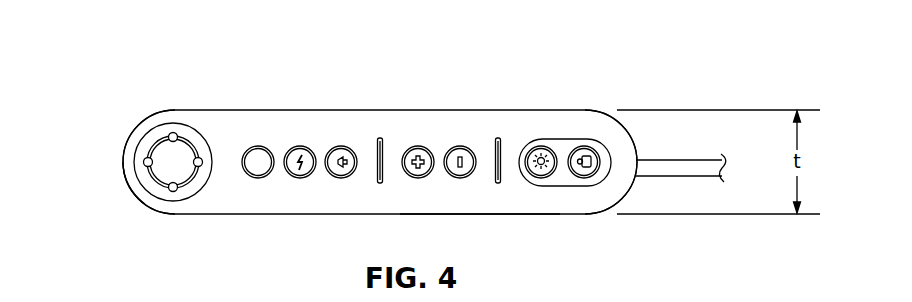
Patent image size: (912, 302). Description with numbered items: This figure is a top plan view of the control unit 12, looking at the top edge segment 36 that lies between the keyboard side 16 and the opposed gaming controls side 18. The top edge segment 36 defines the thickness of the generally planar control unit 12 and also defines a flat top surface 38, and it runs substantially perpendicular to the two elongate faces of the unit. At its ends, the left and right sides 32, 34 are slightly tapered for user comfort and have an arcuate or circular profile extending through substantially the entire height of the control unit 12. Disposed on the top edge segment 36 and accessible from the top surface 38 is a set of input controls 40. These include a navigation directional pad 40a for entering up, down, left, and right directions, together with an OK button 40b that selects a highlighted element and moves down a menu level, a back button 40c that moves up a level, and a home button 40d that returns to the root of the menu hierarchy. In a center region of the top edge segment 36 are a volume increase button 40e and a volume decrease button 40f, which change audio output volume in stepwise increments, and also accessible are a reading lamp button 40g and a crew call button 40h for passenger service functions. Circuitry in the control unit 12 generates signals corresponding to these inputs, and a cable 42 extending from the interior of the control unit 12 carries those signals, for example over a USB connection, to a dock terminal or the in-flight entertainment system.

The control unit 12 is at (546, 215).
The keyboard side 16 is at (138, 213).
The gaming controls side 18 is at (136, 109).
The left side 32 is at (648, 135).
The right side 34 is at (99, 147).
The top edge segment 36 is at (485, 224).
The top surface 38 is at (390, 208).
The input controls 40 is at (610, 133).
The navigation directional pad 40a is at (173, 132).
The OK button 40b is at (257, 147).
The back button 40c is at (300, 147).
The home button 40d is at (341, 147).
The volume increase button 40e is at (417, 147).
The volume decrease button 40f is at (461, 147).
The reading lamp button 40g is at (542, 147).
The crew call button 40h is at (583, 147).
The cable 42 is at (666, 177).